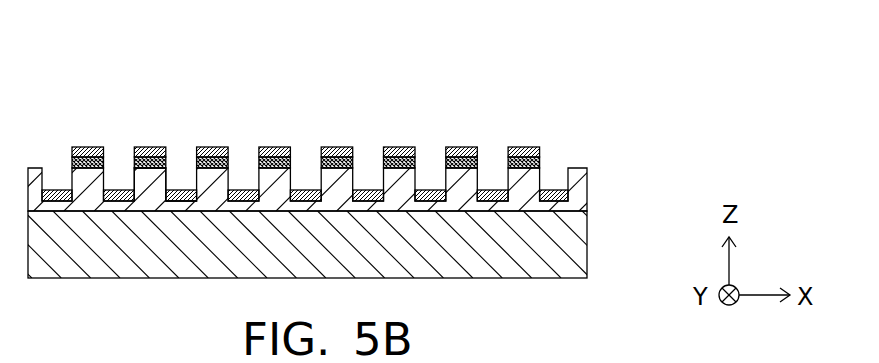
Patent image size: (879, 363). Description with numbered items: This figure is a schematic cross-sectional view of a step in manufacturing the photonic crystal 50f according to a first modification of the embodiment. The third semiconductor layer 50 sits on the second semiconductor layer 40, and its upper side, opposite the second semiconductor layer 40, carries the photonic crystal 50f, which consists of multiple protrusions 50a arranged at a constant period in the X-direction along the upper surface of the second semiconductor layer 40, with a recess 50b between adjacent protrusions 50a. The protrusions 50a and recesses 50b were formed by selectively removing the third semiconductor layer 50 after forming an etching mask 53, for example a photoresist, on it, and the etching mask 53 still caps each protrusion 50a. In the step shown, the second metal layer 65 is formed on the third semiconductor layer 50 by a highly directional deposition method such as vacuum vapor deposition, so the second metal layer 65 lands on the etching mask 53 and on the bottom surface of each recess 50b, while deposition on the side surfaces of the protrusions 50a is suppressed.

The second semiconductor layer 40 is at (582, 245).
The third semiconductor layer 50 is at (580, 188).
The protrusion 50a is at (149, 170).
The recess 50b is at (184, 168).
The photonic crystal 50f is at (178, 119).
The etching mask 53 is at (518, 160).
The second metal layer 65 is at (363, 193).